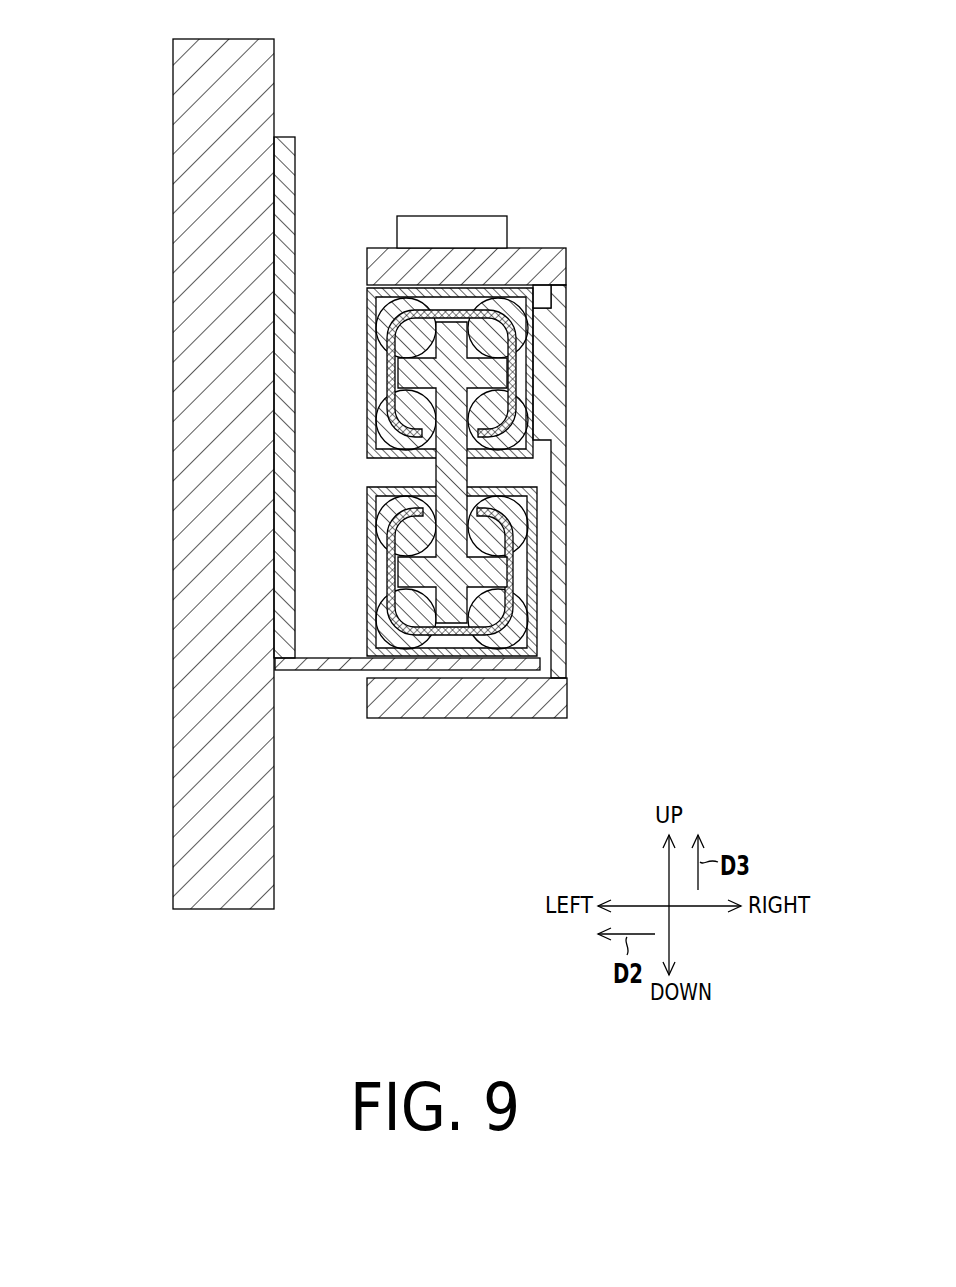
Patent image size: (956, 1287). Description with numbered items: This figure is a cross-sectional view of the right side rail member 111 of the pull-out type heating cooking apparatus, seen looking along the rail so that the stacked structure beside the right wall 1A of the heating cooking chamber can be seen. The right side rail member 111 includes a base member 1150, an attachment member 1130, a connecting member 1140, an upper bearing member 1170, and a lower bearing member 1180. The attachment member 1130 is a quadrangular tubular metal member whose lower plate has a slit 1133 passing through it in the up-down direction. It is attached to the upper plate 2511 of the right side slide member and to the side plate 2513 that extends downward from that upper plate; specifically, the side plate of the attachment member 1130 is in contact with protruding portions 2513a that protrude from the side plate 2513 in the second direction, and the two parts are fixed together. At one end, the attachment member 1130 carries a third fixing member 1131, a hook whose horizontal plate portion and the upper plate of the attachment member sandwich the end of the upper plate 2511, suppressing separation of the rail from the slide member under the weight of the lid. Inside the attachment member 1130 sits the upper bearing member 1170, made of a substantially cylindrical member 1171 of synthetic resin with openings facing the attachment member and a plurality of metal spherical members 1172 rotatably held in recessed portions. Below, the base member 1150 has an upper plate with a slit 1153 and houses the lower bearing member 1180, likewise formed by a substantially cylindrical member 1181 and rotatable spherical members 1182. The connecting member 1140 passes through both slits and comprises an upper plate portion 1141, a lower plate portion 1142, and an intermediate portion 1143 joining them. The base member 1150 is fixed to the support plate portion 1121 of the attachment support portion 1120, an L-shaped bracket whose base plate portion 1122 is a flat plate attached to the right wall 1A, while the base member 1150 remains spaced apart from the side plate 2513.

The right side rail member 111 is at (637, 122).
The right wall 1A is at (183, 465).
The attachment support portion 1120 is at (407, 525).
The support plate portion 1121 is at (352, 671).
The base plate portion 1122 is at (292, 603).
The attachment member 1130 is at (296, 317).
The third fixing member 1131 is at (452, 215).
The slit 1133 is at (432, 462).
The connecting member 1140 is at (595, 472).
The upper plate portion 1141 is at (507, 373).
The lower plate portion 1142 is at (550, 555).
The intermediate portion 1143 is at (470, 470).
The base member 1150 is at (298, 568).
The slit 1153 is at (433, 482).
The upper bearing member 1170 is at (589, 351).
The substantially cylindrical member 1171 is at (510, 367).
The spherical members 1172 is at (515, 327).
The lower bearing member 1180 is at (589, 603).
The substantially cylindrical member 1181 is at (503, 589).
The spherical members 1182 is at (507, 622).
The upper plate 2511 is at (545, 248).
The side plate 2513 is at (566, 272).
The protruding portions 2513a is at (543, 302).